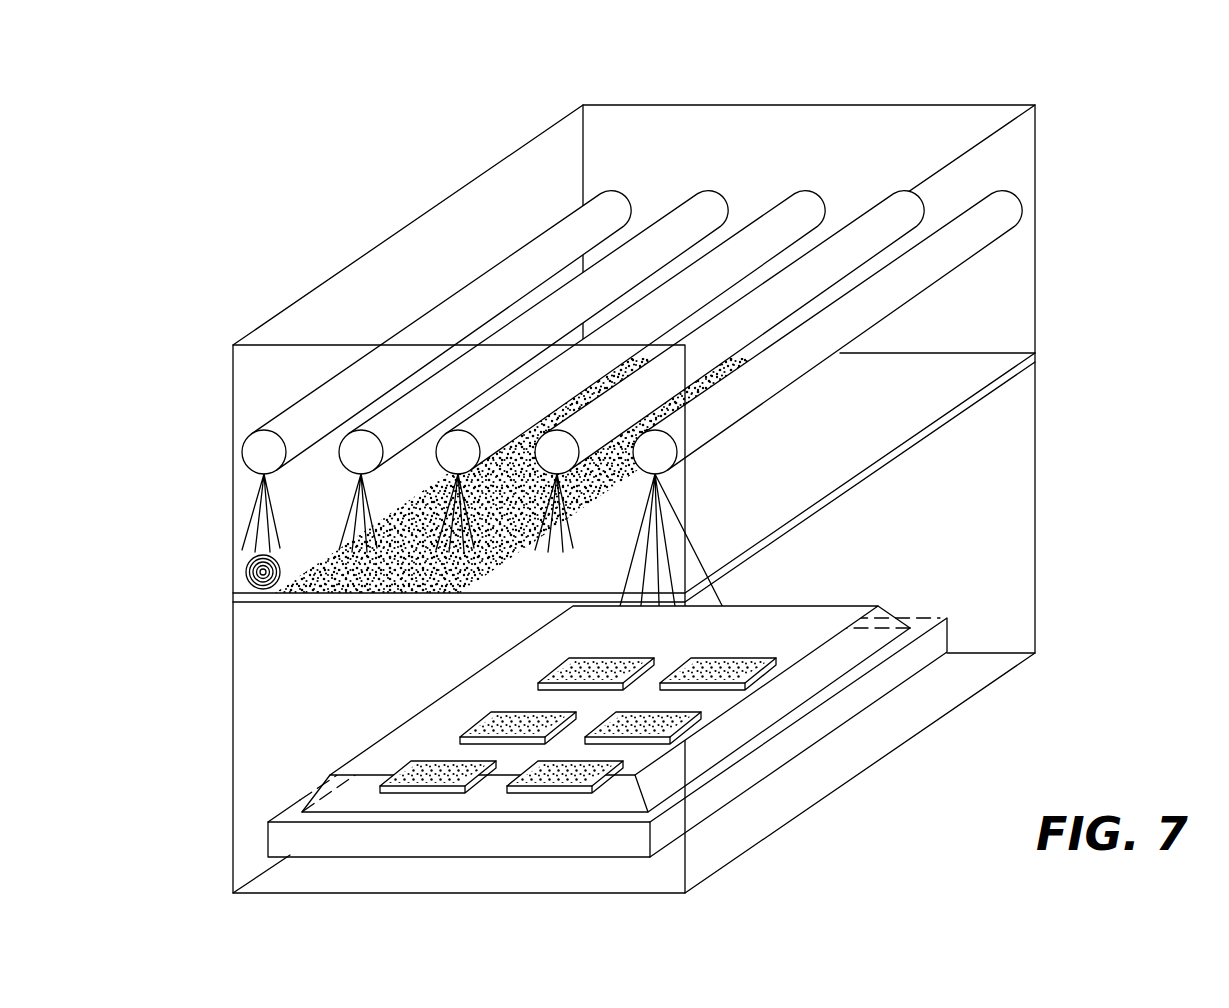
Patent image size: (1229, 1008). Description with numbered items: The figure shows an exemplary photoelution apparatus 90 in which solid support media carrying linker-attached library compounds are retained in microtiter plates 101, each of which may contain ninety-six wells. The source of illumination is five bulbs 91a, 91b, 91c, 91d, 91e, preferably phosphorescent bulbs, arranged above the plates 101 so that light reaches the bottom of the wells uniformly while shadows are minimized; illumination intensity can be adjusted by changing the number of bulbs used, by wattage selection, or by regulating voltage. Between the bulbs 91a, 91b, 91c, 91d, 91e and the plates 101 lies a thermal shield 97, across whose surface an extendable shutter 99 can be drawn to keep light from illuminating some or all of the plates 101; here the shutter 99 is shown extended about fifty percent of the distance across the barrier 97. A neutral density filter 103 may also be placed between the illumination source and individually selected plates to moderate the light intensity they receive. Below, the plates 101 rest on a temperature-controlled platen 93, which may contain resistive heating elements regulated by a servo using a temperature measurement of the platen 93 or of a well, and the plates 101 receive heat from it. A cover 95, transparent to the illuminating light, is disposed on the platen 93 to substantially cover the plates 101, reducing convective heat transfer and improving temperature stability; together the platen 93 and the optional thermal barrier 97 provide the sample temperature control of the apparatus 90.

The apparatus 90 is at (250, 161).
The bulb 91a is at (1003, 205).
The bulb 91b is at (905, 205).
The bulb 91c is at (806, 205).
The bulb 91d is at (709, 205).
The bulb 91e is at (612, 205).
The platen 93 is at (770, 753).
The cover 95 is at (775, 613).
The thermal shield 97 is at (987, 368).
The shutter 99 is at (372, 573).
The microtiter plate 101 is at (493, 717).
The neutral density filter 103 is at (787, 657).